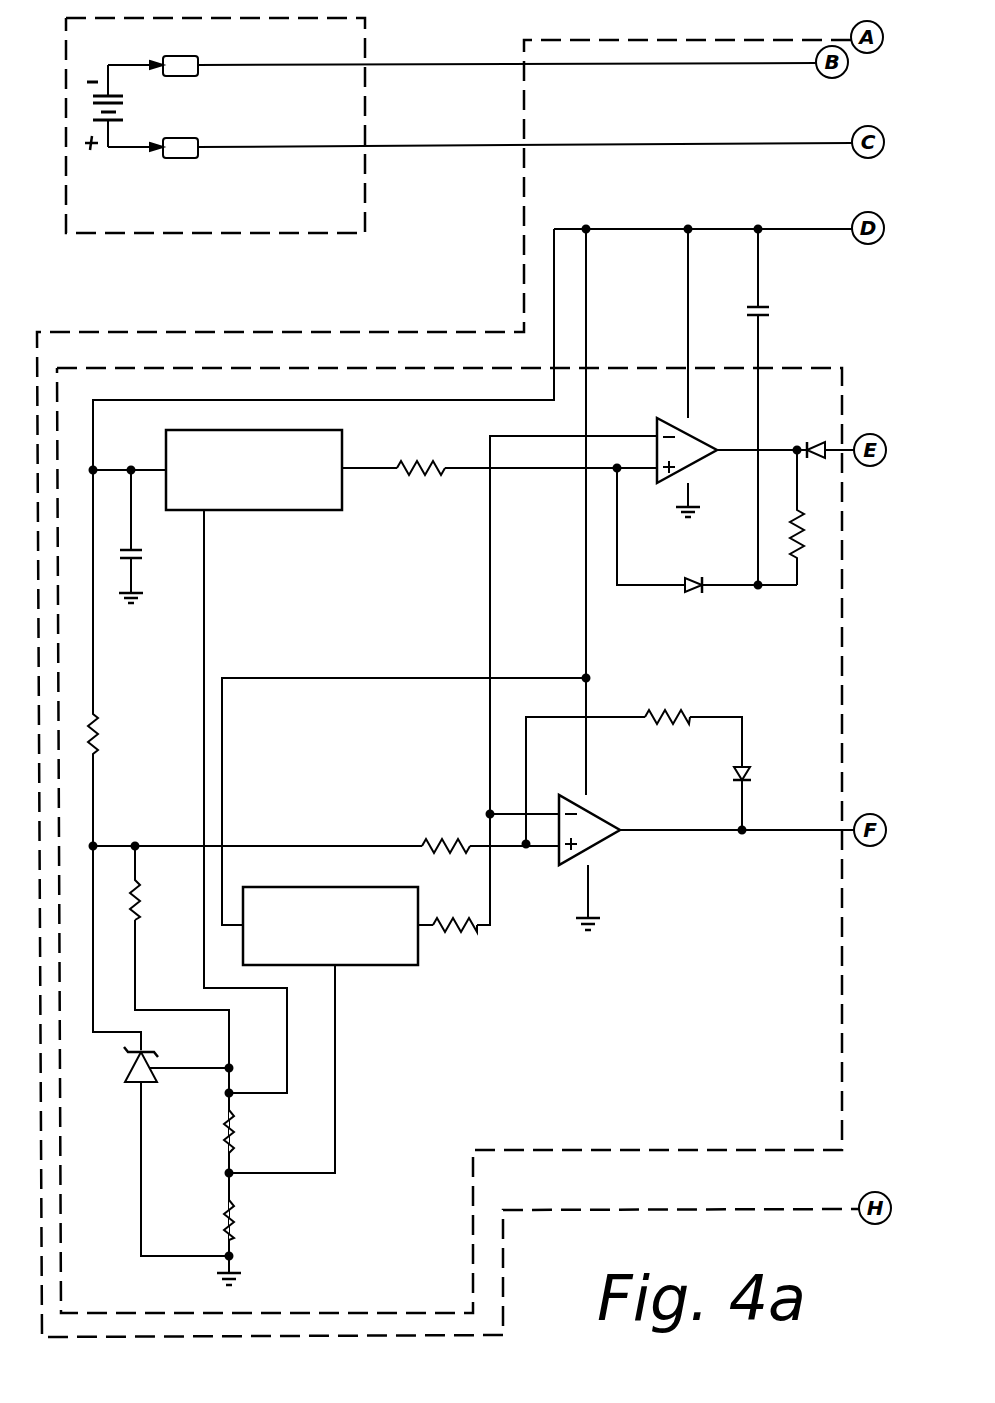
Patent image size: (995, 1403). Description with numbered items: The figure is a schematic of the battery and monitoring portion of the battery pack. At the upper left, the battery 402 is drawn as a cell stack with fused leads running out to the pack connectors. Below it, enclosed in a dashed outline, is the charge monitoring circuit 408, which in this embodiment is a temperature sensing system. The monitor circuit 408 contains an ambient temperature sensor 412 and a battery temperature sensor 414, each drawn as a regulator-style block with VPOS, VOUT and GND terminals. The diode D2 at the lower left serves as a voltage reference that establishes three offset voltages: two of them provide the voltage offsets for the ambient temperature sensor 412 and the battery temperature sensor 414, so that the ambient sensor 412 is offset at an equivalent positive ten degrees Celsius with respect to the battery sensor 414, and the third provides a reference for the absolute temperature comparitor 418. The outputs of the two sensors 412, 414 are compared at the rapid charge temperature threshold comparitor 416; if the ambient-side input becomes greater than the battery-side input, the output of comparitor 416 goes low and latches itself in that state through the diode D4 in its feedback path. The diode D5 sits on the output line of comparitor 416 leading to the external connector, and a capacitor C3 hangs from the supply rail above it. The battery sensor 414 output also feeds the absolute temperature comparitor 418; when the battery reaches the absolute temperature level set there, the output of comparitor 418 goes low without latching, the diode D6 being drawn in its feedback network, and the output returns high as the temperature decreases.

The battery 402 is at (365, 226).
The charge monitoring circuit 408 is at (386, 365).
The ambient temperature sensor 412 is at (258, 510).
The battery temperature sensor 414 is at (370, 965).
The rapid charge temperature threshold comparitor 416 is at (664, 417).
The absolute temperature comparitor 418 is at (601, 838).
The capacitor C3 is at (775, 296).
The diode D2 is at (124, 1066).
The diode D4 is at (695, 572).
The diode D5 is at (823, 442).
The diode D6 is at (760, 777).